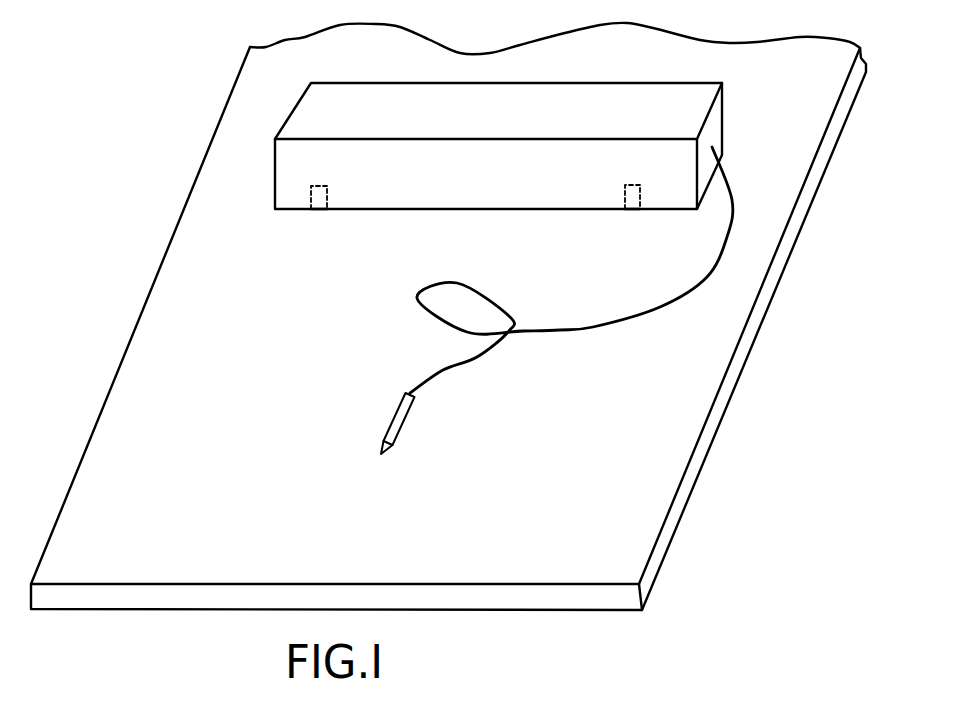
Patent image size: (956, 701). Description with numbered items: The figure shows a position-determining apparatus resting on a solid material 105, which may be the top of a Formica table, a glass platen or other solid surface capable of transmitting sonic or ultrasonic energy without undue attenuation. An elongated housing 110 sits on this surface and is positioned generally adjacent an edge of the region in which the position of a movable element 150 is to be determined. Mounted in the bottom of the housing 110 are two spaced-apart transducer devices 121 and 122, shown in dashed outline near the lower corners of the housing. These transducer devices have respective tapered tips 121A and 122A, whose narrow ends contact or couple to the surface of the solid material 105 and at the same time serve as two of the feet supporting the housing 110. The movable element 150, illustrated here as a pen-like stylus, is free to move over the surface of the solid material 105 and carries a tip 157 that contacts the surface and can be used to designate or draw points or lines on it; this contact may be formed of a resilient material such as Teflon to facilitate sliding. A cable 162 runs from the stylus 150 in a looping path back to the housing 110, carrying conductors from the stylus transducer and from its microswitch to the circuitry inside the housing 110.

The solid material 105 is at (117, 405).
The elongated housing 110 is at (353, 97).
The transducer device 121 is at (327, 190).
The tapered tip 121A is at (320, 210).
The transducer device 122 is at (624, 200).
The tapered tip 122A is at (632, 210).
The movable element 150 is at (390, 426).
The tip 157 is at (383, 457).
The cable 162 is at (555, 330).